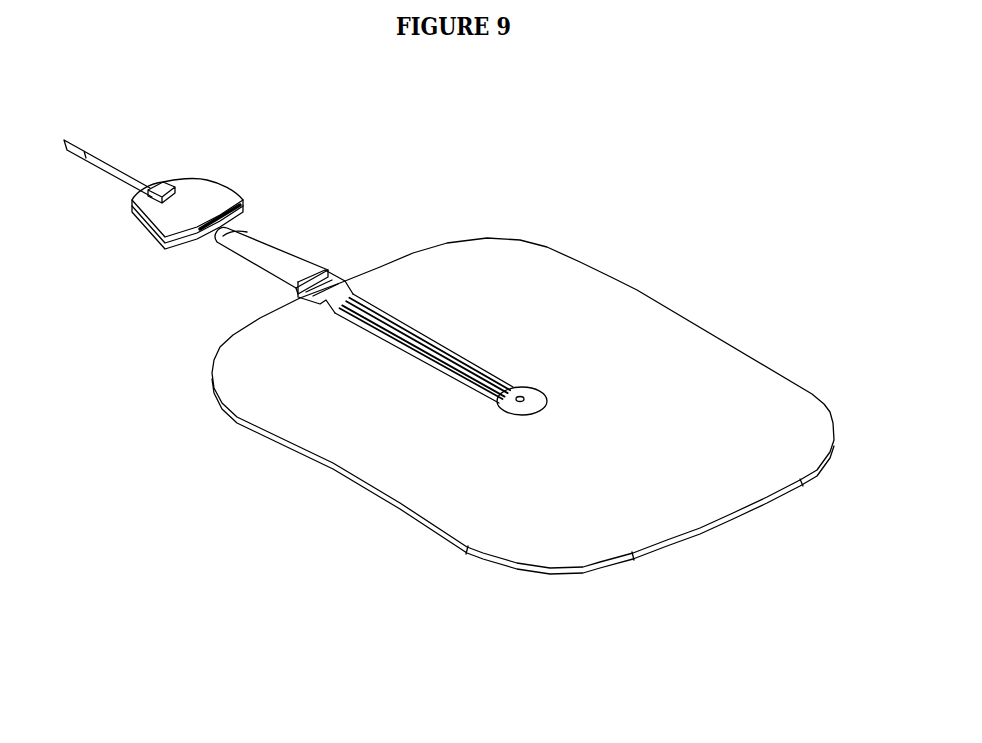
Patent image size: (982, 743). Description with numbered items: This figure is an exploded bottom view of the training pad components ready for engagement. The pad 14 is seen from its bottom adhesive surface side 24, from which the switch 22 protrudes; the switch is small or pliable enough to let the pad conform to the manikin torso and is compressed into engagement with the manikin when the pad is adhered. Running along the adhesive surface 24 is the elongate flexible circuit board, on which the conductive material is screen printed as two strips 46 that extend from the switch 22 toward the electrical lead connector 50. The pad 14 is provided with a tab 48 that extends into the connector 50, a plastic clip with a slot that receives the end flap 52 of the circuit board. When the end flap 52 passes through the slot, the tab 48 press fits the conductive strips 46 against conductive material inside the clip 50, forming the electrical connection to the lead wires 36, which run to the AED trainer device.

The pad 14 is at (728, 310).
The bottom adhesive surface side 24 is at (728, 357).
The switch 22 is at (547, 369).
The conductive material strips 46 is at (330, 278).
The tab 48 is at (300, 297).
The end flap 52 is at (265, 250).
The electrical lead connector 50 is at (225, 168).
The wires 36 is at (117, 162).